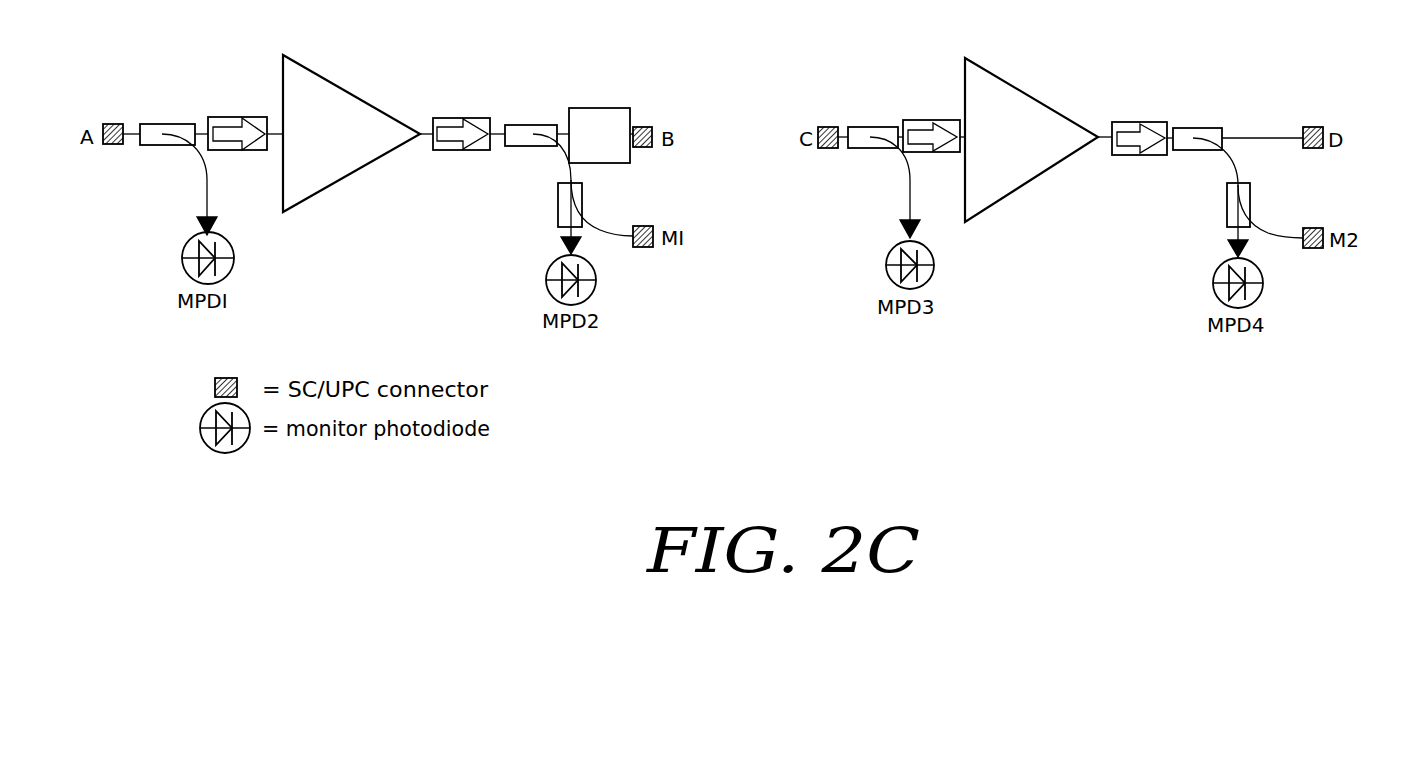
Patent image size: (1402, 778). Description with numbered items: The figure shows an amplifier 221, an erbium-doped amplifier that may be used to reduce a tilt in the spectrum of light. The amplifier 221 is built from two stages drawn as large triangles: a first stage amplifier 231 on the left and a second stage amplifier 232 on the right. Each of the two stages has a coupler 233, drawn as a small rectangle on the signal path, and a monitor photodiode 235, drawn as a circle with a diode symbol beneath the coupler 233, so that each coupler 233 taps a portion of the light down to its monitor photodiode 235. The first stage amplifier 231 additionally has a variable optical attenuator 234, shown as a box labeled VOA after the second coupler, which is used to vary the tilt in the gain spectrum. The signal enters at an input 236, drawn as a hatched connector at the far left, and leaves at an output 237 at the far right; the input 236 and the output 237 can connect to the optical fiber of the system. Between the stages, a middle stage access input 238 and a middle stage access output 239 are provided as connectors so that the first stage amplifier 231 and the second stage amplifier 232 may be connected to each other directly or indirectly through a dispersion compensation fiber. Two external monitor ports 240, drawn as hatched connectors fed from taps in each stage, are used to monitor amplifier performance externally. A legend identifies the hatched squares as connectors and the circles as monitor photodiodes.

The amplifier 221 is at (831, 395).
The first stage amplifier 231 is at (335, 68).
The second stage amplifier 232 is at (1029, 65).
The coupler 233 is at (167, 124).
The variable optical attenuator 234 is at (630, 108).
The monitor photodiode 235 is at (235, 262).
The input 236 is at (112, 146).
The output 237 is at (1317, 127).
The middle stage access input 238 is at (650, 127).
The middle stage access output 239 is at (825, 150).
The external monitor port 240 is at (643, 226).